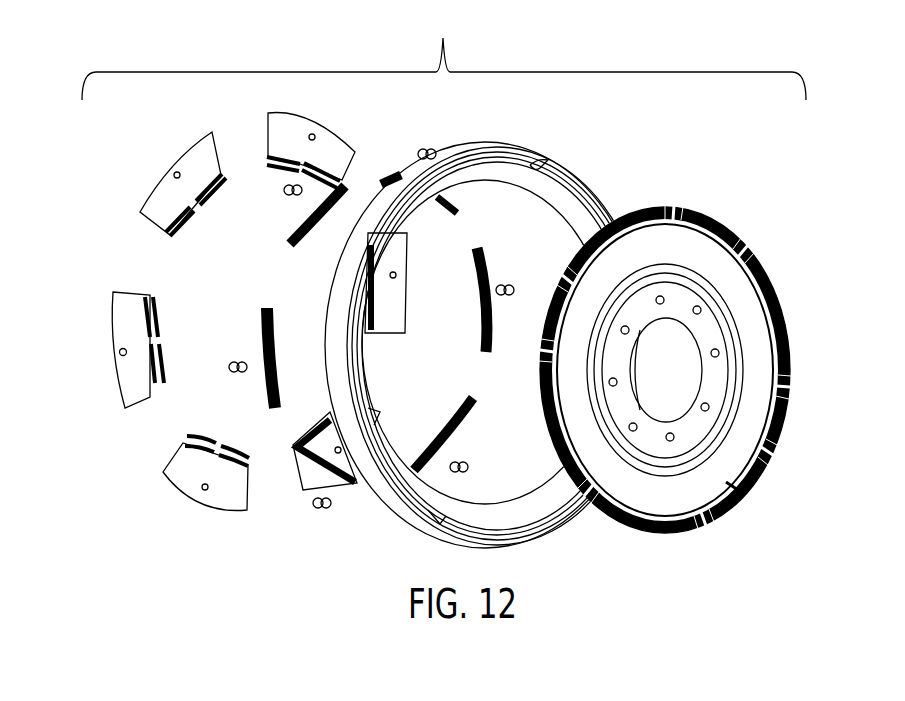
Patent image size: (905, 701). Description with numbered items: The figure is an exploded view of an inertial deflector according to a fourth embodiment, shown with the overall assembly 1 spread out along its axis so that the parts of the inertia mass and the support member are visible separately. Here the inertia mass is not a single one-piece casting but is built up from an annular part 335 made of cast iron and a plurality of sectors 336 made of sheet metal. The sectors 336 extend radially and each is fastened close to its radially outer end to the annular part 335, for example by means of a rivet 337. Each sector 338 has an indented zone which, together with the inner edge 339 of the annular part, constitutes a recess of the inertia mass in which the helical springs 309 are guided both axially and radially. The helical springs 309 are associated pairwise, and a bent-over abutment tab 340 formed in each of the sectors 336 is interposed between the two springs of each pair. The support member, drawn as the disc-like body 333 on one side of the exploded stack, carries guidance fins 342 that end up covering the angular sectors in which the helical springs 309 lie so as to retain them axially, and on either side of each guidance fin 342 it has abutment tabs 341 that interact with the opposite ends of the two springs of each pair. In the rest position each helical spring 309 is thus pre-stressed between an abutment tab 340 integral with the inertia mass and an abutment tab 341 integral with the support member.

The Lens assembly 1 is at (444, 56).
The helical spring 309 is at (352, 158).
The rotor 333 is at (783, 293).
The annular part 335 is at (531, 160).
The sector 336 is at (163, 195).
The rivet 337 is at (283, 188).
The sector 338 is at (160, 230).
The inner edge 339 is at (571, 227).
The bent-over abutment tab 340 is at (143, 347).
The abutment tab 341 is at (665, 203).
The guidance fin 342 is at (738, 485).